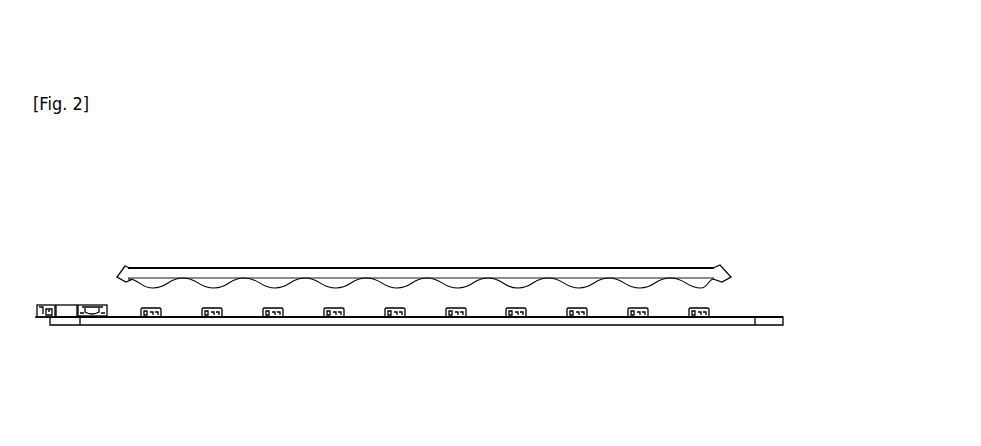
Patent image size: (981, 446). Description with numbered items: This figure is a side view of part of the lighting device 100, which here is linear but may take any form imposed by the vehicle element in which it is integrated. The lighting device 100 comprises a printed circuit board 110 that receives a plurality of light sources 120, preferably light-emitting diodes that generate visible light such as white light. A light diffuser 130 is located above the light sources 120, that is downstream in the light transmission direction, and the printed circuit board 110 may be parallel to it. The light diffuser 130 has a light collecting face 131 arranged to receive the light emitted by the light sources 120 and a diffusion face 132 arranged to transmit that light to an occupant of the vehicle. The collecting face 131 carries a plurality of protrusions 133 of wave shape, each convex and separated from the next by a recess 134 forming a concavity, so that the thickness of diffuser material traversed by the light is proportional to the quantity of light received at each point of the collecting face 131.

The lighting device 100 is at (146, 184).
The printed circuit board 110 is at (132, 326).
The light sources 120 is at (330, 318).
The light diffuser 130 is at (396, 270).
The light collecting face 131 is at (715, 281).
The diffusion face 132 is at (702, 268).
The protrusions 133 is at (517, 285).
The recess 134 is at (600, 282).